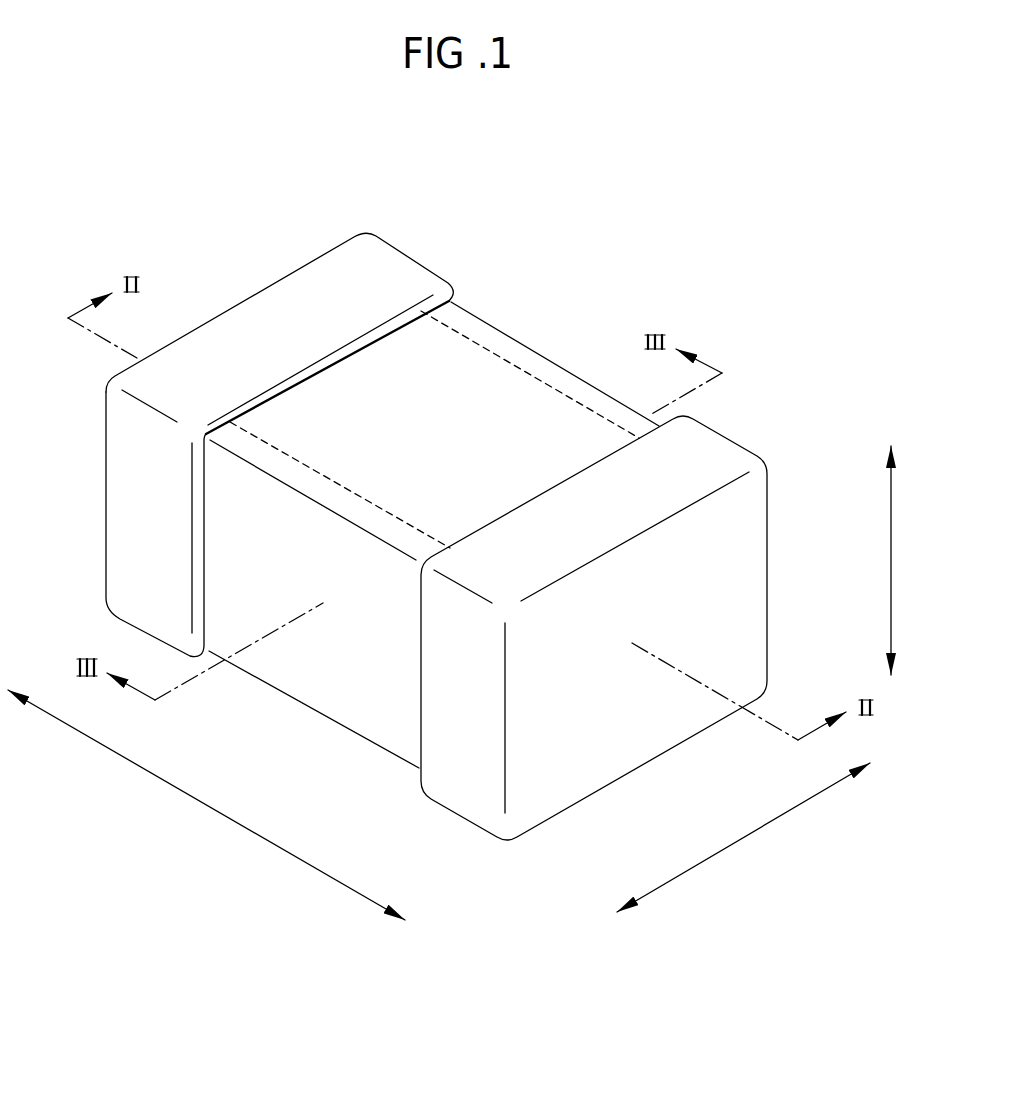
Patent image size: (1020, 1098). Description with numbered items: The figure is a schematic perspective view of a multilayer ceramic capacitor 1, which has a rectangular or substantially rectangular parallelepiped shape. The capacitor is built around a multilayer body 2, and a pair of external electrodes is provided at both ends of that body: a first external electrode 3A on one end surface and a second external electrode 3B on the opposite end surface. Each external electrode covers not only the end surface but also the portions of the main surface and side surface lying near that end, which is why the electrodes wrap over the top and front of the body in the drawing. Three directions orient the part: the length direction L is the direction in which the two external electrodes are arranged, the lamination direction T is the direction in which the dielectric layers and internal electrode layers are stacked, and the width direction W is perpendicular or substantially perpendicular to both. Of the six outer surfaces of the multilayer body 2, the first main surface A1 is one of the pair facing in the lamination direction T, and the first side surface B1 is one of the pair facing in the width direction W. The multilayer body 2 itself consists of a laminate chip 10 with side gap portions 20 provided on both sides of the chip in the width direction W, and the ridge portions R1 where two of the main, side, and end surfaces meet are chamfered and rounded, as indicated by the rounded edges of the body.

The multilayer ceramic capacitor 1 is at (803, 304).
The multilayer body 2 is at (433, 381).
The first external electrode 3A is at (373, 267).
The second external electrode 3B is at (720, 447).
The laminate chip 10 is at (350, 384).
The side gap portion 20 is at (570, 377).
The ridge portion R1 is at (511, 334).
The first main surface A1 is at (465, 437).
The first side surface B1 is at (335, 582).
The length direction L is at (206, 805).
The width direction W is at (743, 837).
The lamination direction T is at (906, 560).